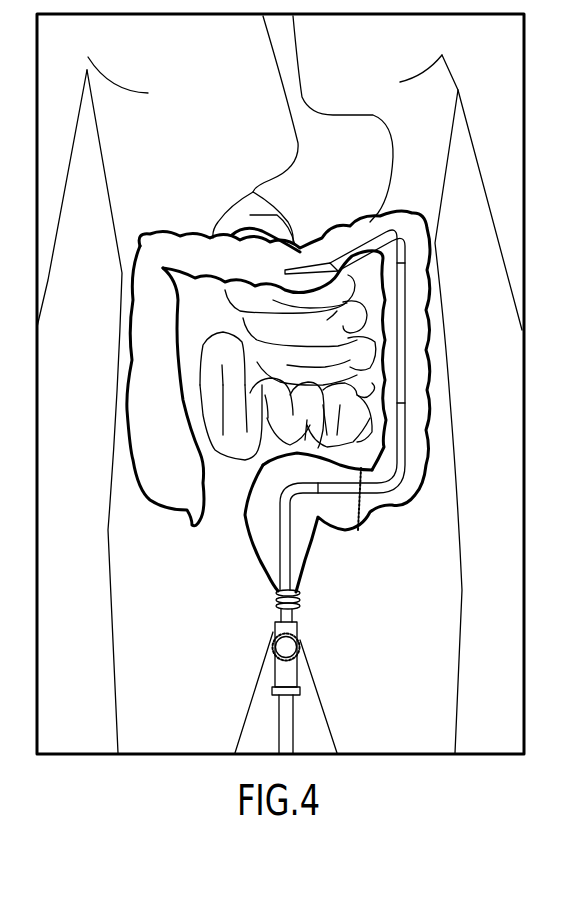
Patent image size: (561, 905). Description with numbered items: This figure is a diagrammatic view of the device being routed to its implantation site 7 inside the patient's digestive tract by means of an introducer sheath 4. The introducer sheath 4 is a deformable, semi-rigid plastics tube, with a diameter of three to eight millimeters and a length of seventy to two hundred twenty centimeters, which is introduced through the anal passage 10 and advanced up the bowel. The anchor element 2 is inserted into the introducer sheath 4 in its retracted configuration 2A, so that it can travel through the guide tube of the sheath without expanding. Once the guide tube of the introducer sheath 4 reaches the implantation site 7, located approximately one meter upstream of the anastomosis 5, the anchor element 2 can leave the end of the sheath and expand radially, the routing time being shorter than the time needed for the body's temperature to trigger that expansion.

The anchor element 2 is at (320, 250).
The retracted configuration 2A is at (320, 250).
The introducer sheath 4 is at (408, 504).
The anastomosis 5 is at (365, 512).
The implantation site 7 is at (250, 215).
The anal passage 10 is at (300, 600).